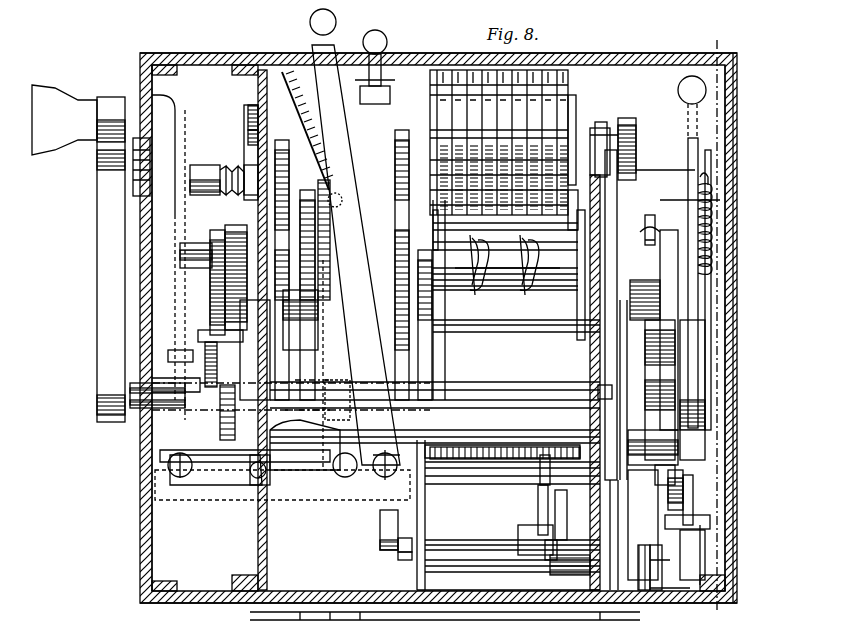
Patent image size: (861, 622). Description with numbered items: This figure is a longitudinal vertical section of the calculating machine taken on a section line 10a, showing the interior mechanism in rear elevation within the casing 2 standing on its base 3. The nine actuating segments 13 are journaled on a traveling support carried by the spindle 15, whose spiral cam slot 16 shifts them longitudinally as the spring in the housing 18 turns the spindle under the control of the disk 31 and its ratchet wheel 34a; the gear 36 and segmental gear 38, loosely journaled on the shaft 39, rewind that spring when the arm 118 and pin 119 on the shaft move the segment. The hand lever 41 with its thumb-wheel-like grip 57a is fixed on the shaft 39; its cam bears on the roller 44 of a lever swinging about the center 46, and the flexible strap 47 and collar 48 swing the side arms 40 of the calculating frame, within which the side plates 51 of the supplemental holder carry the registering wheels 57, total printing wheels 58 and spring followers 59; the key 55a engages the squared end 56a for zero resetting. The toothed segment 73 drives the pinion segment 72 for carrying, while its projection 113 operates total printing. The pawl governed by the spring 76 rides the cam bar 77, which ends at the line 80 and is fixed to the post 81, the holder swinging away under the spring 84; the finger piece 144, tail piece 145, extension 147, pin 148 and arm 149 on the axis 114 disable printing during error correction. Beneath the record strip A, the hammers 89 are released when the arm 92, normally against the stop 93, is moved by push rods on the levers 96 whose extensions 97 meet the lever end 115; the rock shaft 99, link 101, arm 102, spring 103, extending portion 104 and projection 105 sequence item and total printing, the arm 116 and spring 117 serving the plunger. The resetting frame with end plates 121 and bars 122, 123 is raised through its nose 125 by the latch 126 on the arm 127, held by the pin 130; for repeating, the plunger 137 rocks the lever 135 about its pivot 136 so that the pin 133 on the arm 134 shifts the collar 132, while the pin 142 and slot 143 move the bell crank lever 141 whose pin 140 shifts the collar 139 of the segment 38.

The casing 2 is at (736, 138).
The base frame 3 is at (425, 328).
The section line 10a is at (721, 321).
The actuating segments 13 is at (300, 205).
The spindle 15 is at (495, 280).
The spiral or cam slot 16 is at (528, 280).
The housing 18 is at (641, 230).
The disk 31 is at (226, 236).
The ratchet wheel 34a is at (182, 257).
The gear 36 is at (212, 245).
The segmental gear 38 is at (180, 357).
The shaft 39 is at (488, 398).
The side plates or arms 40 is at (250, 148).
The hand lever 41 is at (105, 255).
The projection or roller 44 is at (690, 442).
The center 46 is at (668, 357).
The flat spring or flexible member 47 is at (712, 202).
The collar 48 is at (690, 312).
The side plates 51 is at (575, 228).
The key 55a is at (250, 134).
The squared end 56a is at (250, 116).
The registering wheels 57 is at (560, 85).
The milled thumb wheel 57a is at (138, 165).
The total printing wheels 58 is at (556, 230).
The spring followers 59 is at (578, 102).
The pinion segment 72 is at (630, 122).
The toothed segment 73 is at (680, 428).
The spring 76 is at (322, 145).
The cam bar 77 is at (458, 232).
The dotted line 80 is at (420, 328).
The post 81 is at (382, 280).
The spring 84 is at (620, 132).
The hammers 89 is at (487, 458).
The arm 92 is at (540, 465).
The stop 93 is at (447, 480).
The levers 96 is at (578, 440).
The extensions 97 is at (560, 512).
The rock shaft 99 is at (490, 560).
The link 101 is at (695, 500).
The arm 102 is at (700, 520).
The spring 103 is at (652, 582).
The extending portion 104 is at (660, 472).
The projection 105 is at (690, 478).
The projection 113 is at (598, 390).
The axis 114 is at (476, 545).
The opposite end 115 is at (688, 160).
The arm 116 is at (700, 578).
The spring 117 is at (712, 238).
The arm 118 is at (205, 310).
The pin 119 is at (215, 332).
The end plates 121 is at (210, 345).
The longitudinal bar 122 is at (488, 322).
The longitudinal bar 123 is at (480, 200).
The nose or projection 125 is at (318, 234).
The spring latch 126 is at (330, 272).
The arm 127 is at (310, 370).
The pin 130 is at (307, 322).
The collar 132 is at (314, 406).
The pin 133 is at (340, 440).
The arm 134 is at (385, 478).
The lever 135 is at (300, 475).
The pivot 136 is at (345, 478).
The plunger 137 is at (318, 60).
The collar 139 is at (185, 383).
The pin 140 is at (172, 405).
The bell crank lever 141 is at (190, 455).
The pin 142 is at (258, 480).
The slot 143 is at (252, 478).
The finger piece 144 is at (388, 42).
The tail piece 145 is at (372, 28).
The extension 147 is at (383, 517).
The pin 148 is at (396, 545).
The arm 149 is at (405, 560).
The record or paper strip A is at (508, 443).